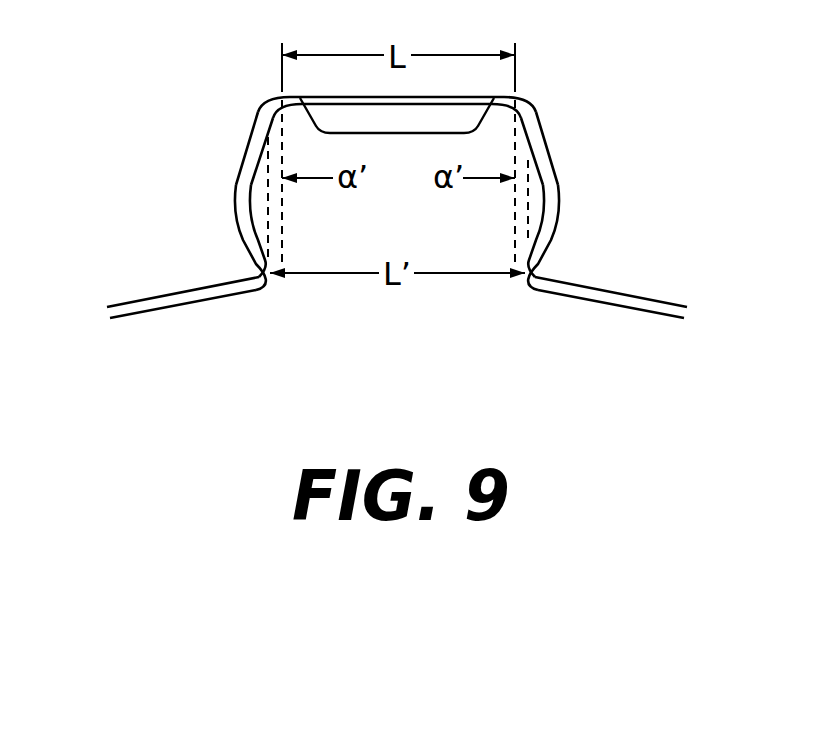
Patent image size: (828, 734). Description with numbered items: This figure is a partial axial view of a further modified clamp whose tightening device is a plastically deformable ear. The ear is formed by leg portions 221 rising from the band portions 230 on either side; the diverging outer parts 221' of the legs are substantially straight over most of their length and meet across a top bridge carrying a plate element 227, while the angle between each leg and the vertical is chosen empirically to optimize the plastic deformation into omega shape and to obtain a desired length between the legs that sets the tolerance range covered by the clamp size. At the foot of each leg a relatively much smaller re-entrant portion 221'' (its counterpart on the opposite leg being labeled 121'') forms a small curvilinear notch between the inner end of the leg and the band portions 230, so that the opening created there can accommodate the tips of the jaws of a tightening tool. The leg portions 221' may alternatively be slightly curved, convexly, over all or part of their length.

The leg portion 221 is at (400, 146).
The diverging outer part 221' is at (401, 152).
The re-entrant portion 221'' is at (164, 237).
The bent portion of side wall 121'' is at (632, 237).
The plate insert in protrusion 227 is at (391, 124).
The band portion 230 is at (202, 300).